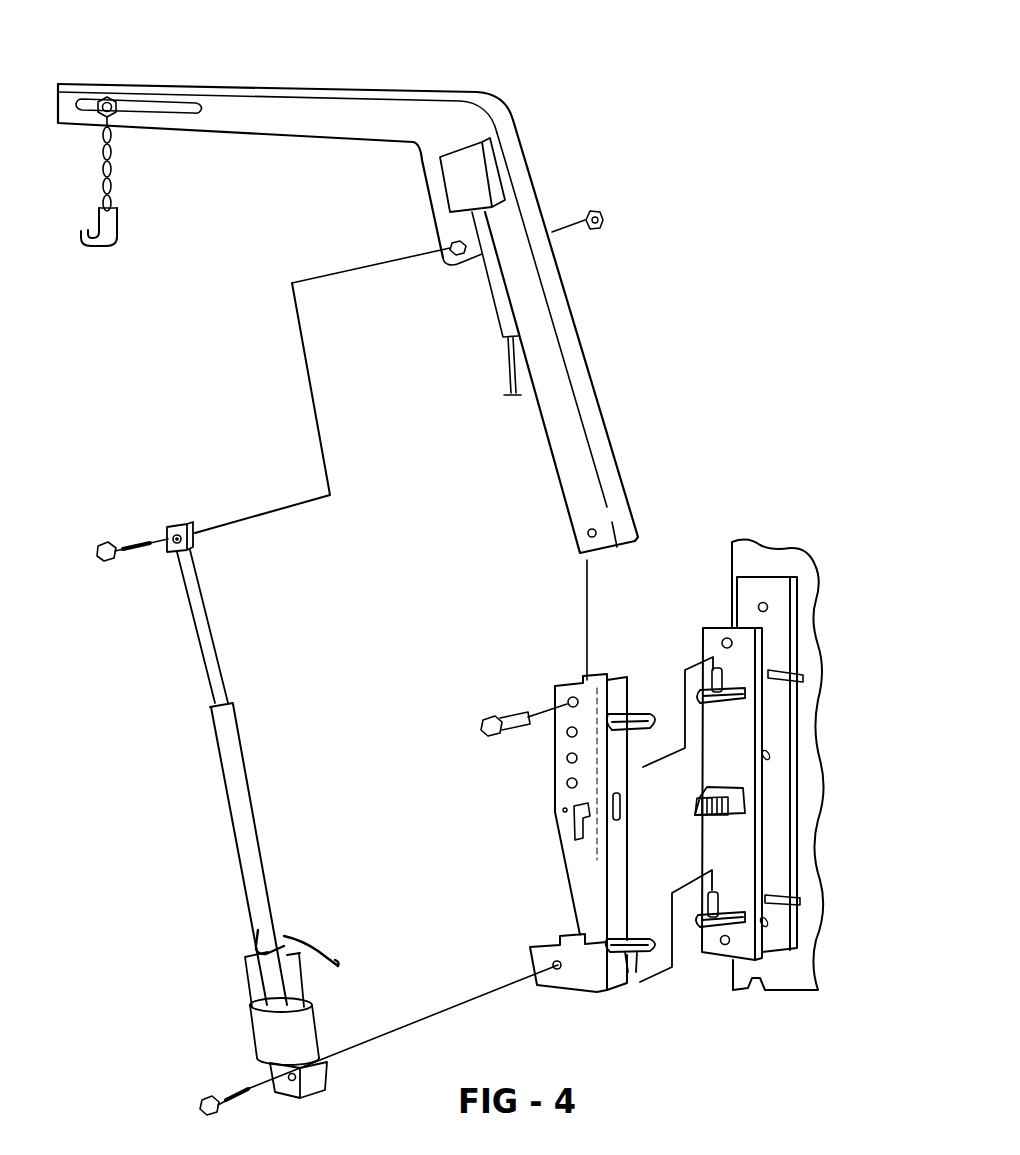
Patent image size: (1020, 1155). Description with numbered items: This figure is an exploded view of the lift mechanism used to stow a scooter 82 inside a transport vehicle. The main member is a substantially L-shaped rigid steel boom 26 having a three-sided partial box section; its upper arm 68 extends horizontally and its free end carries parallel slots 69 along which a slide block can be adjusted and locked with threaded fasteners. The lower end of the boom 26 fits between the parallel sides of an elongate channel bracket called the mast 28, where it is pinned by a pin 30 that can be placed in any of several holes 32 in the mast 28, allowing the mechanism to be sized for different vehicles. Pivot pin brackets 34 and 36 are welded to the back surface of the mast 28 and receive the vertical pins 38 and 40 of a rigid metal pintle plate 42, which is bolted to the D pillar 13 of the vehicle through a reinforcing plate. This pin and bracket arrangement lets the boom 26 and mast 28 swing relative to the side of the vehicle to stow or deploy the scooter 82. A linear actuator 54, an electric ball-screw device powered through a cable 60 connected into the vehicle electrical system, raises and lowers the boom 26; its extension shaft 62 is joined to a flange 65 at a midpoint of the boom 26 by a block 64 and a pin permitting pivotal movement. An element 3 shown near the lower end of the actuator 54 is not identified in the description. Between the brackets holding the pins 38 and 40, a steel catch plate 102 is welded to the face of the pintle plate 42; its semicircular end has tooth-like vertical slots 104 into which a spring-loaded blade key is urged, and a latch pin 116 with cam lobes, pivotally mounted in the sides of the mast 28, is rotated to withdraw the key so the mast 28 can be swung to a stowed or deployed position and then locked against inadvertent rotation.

The bolt 3 is at (225, 1095).
The D pillar 13 is at (763, 565).
The boom 26 is at (503, 112).
The mast 28 is at (550, 833).
The pin 30 is at (508, 712).
The holes 32 is at (567, 758).
The pivot pin bracket 34 is at (640, 712).
The pivot pin bracket 36 is at (632, 972).
The vertical pin 38 is at (728, 672).
The vertical pin 40 is at (727, 897).
The pintle plate 42 is at (737, 732).
The linear actuator 54 is at (270, 850).
The cable 60 is at (315, 950).
The extension shaft 62 is at (213, 637).
The block 64 is at (188, 523).
The flange 65 is at (442, 210).
The upper arm 68 is at (304, 88).
The slots 69 is at (158, 108).
The scooter 82 is at (783, 603).
The catch plate 102 is at (695, 807).
The slots 104 is at (696, 814).
The latch pin 116 is at (567, 867).